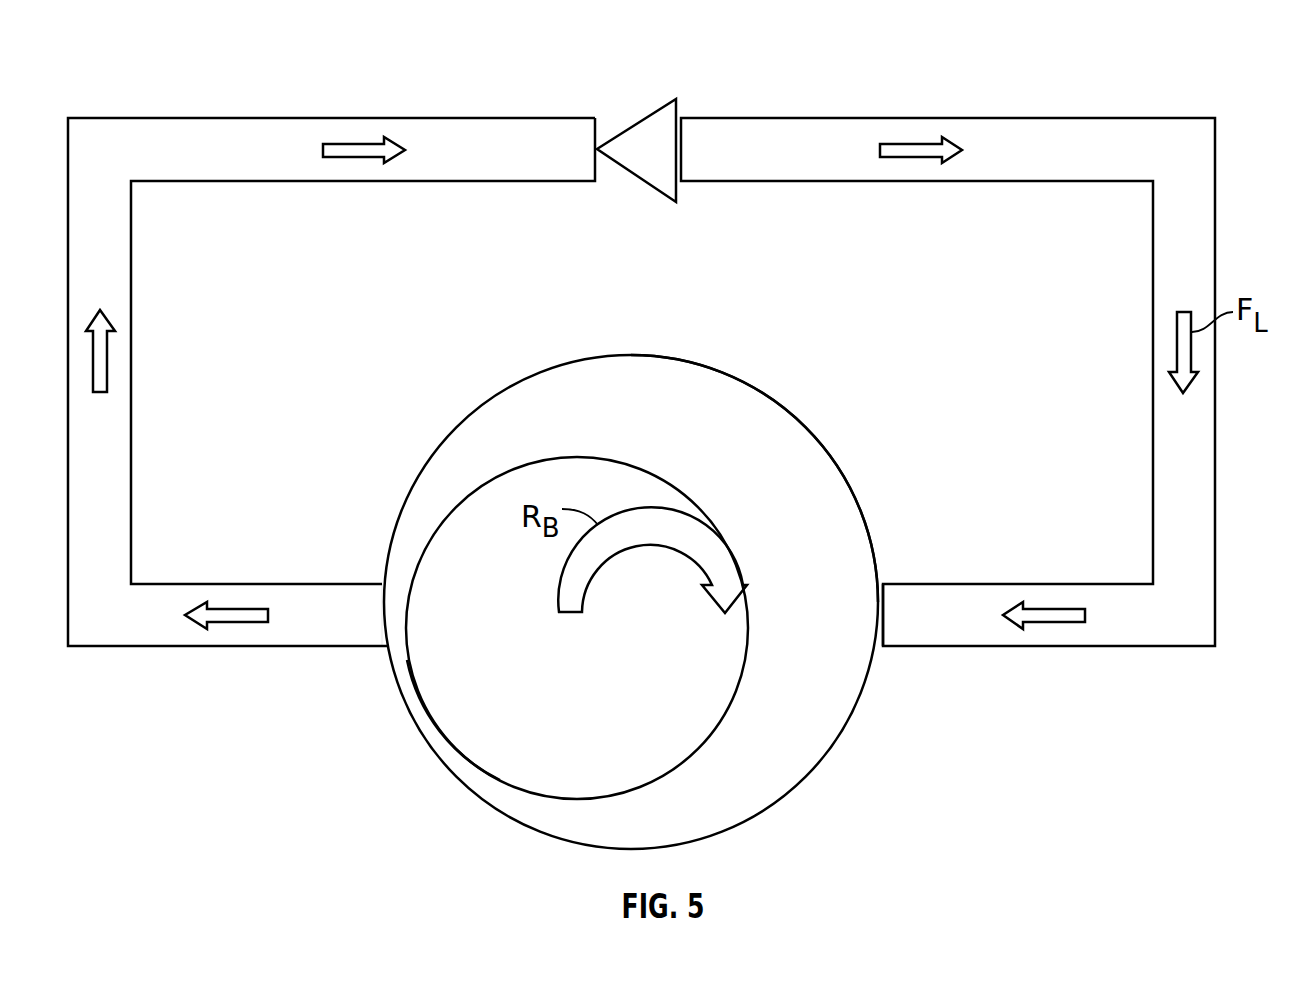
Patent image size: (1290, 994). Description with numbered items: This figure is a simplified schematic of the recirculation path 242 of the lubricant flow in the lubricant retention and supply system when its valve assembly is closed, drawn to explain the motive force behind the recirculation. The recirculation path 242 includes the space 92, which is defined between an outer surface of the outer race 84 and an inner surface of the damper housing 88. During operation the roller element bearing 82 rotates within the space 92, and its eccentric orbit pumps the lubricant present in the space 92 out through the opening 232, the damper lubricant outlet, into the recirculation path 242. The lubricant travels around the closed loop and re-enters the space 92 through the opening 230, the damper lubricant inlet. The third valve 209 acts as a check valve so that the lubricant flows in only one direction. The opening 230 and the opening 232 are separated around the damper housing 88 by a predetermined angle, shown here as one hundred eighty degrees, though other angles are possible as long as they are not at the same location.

The third valve 209 is at (638, 120).
The recirculation path 242 is at (962, 118).
The space 92 is at (729, 413).
The roller element bearing 82 is at (480, 500).
The outer race 84 is at (472, 767).
The damper housing 88 is at (801, 780).
The opening 230 is at (879, 565).
The opening 232 is at (368, 614).